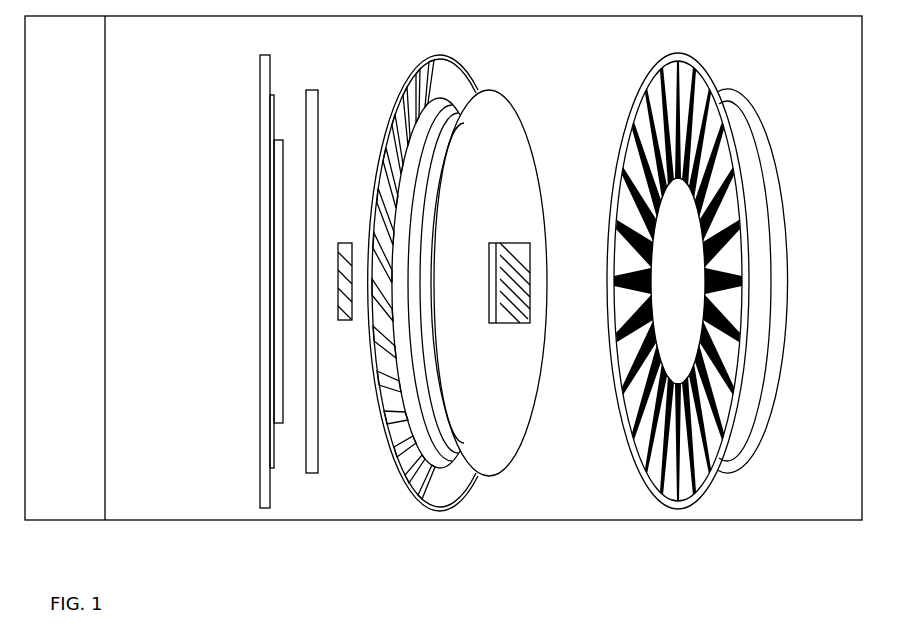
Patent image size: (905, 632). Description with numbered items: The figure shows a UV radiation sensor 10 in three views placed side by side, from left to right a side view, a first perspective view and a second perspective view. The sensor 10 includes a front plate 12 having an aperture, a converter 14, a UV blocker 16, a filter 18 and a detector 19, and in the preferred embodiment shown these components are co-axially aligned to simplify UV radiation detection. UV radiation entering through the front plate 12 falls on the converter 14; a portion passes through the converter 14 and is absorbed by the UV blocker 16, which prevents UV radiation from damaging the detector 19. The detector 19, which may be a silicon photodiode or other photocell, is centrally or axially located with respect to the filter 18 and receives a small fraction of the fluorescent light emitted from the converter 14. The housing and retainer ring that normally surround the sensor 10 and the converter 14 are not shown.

The UV radiation sensor 10 is at (430, 316).
The front plate 12 is at (260, 56).
The converter 14 is at (264, 115).
The UV blocker 16 is at (268, 180).
The filter 18 is at (300, 244).
The detector 19 is at (332, 309).